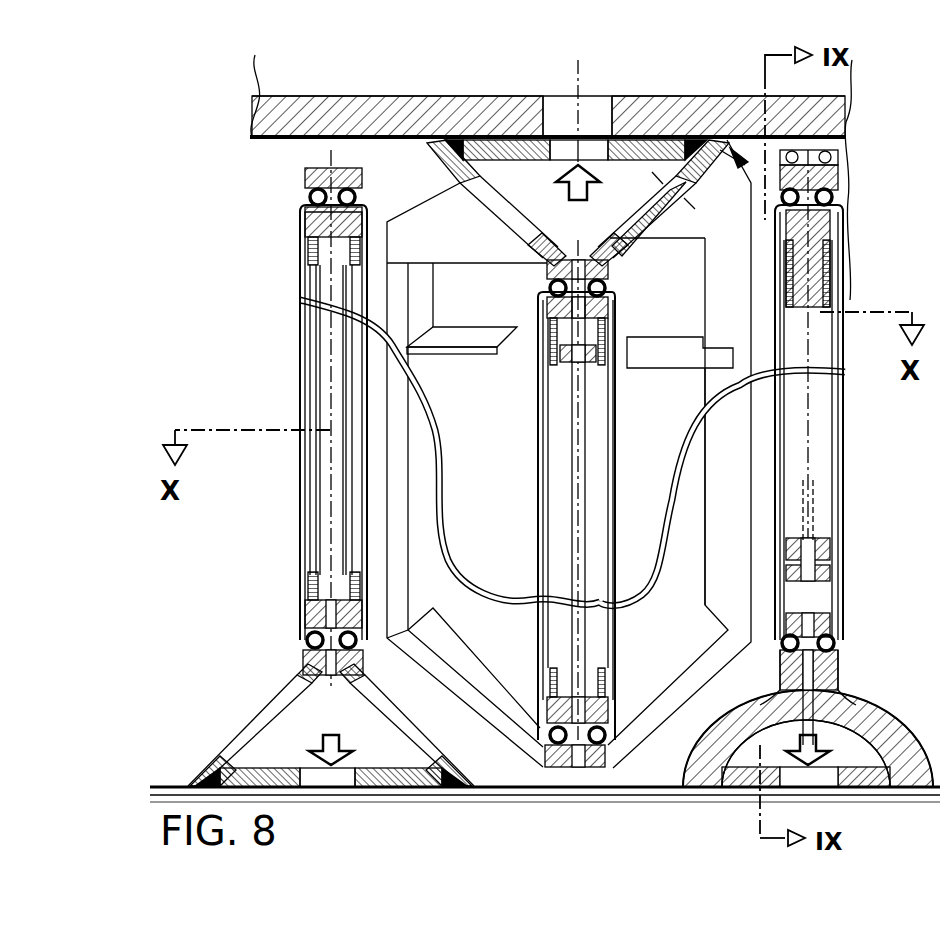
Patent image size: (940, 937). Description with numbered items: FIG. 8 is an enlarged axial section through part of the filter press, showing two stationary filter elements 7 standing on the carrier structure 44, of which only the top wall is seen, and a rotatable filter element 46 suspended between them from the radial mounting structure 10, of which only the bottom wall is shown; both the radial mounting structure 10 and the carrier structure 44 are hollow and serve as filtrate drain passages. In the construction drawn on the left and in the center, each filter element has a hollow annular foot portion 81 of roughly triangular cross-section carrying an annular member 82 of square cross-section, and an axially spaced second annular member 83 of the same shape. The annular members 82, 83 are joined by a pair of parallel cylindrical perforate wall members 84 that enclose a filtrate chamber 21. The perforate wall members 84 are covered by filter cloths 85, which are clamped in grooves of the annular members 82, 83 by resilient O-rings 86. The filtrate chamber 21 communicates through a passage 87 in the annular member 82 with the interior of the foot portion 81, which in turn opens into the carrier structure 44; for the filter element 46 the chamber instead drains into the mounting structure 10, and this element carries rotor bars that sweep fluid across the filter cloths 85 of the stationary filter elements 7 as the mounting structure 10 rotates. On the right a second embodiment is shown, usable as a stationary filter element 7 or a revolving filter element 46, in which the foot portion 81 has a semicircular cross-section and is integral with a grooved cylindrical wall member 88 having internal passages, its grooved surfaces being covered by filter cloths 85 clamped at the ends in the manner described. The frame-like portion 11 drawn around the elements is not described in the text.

The stationary filter element 7 is at (522, 439).
The radial mounting structure 10 is at (325, 112).
The frame 11 is at (405, 285).
The filtrate chamber 21 is at (318, 497).
The carrier structure 44 is at (445, 790).
The rotatable filter element 46 is at (712, 200).
The foot portion 81 is at (640, 205).
The annular member 82 is at (305, 612).
The second annular member 83 is at (305, 222).
The perforate wall member 84 is at (312, 356).
The filter cloth 85 is at (370, 296).
The resilient O-ring 86 is at (310, 196).
The passage 87 is at (387, 622).
The cylindrical wall member 88 is at (828, 228).